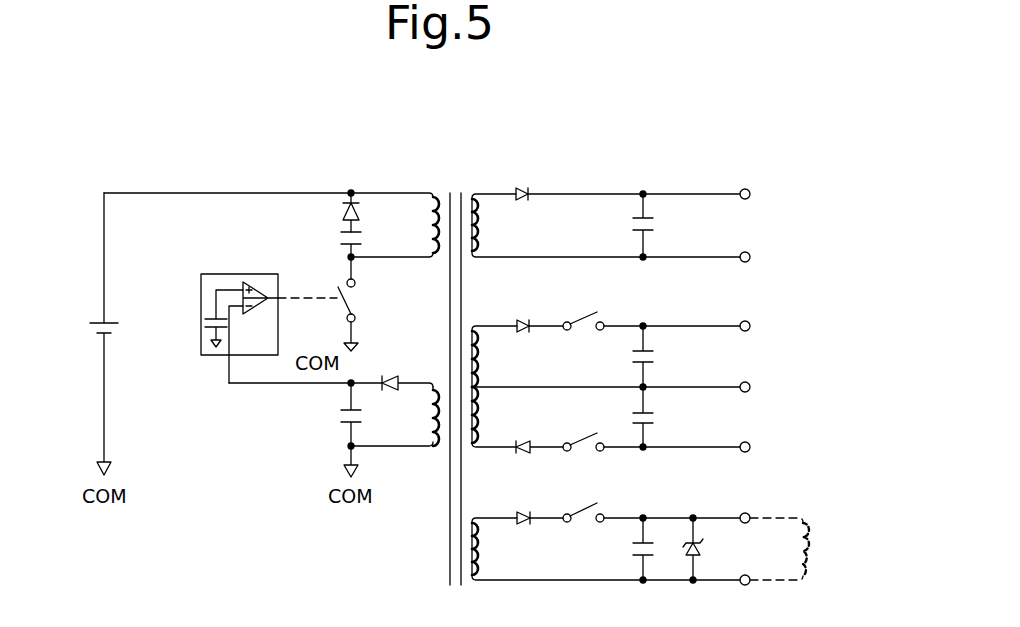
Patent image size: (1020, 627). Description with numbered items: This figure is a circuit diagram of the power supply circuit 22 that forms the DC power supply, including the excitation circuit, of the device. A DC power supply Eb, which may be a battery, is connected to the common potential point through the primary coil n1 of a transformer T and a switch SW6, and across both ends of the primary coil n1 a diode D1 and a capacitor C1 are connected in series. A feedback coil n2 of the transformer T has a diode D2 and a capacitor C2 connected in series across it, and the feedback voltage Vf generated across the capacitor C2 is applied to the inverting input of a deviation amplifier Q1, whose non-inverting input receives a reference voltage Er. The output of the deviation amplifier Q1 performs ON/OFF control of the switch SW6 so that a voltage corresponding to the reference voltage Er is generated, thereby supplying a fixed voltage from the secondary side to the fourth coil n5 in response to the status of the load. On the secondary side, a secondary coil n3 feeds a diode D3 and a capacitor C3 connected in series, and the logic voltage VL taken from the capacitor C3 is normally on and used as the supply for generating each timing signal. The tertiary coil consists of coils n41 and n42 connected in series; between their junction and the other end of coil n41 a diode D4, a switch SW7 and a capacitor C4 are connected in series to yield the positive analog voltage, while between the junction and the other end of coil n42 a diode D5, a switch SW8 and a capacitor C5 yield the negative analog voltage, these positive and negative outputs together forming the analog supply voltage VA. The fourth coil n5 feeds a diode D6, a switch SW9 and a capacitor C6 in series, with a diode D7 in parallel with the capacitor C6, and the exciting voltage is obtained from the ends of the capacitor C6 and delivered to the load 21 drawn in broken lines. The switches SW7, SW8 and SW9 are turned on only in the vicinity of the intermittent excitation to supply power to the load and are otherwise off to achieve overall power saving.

The load (dashed winding) 21 is at (812, 553).
The power supply circuit 22 is at (489, 145).
The transformer T is at (453, 372).
The DC power supply Eb is at (86, 334).
The deviation amplifier Q1 is at (258, 285).
The reference voltage Er is at (208, 322).
The feedback voltage Vf is at (278, 397).
The diode D1 is at (332, 211).
The diode D2 is at (390, 371).
The diode D3 is at (574, 177).
The diode D4 is at (535, 308).
The diode D5 is at (525, 460).
The diode D6 is at (525, 505).
The diode D7 is at (711, 549).
The capacitor C1 is at (333, 246).
The capacitor C2 is at (332, 430).
The capacitor C3 is at (659, 225).
The capacitor C4 is at (660, 356).
The capacitor C5 is at (660, 418).
The capacitor C6 is at (644, 549).
The switch SW6 is at (341, 304).
The switch SW7 is at (602, 336).
The switch SW8 is at (602, 429).
The switch SW9 is at (601, 500).
The primary coil n1 is at (395, 225).
The feedback coil n2 is at (395, 416).
The secondary coil n3 is at (557, 225).
The coil n41 is at (557, 356).
The coil n42 is at (501, 417).
The fourth coil n5 is at (557, 549).
The logic voltage VL is at (712, 225).
The analog power supply voltage VA is at (722, 387).